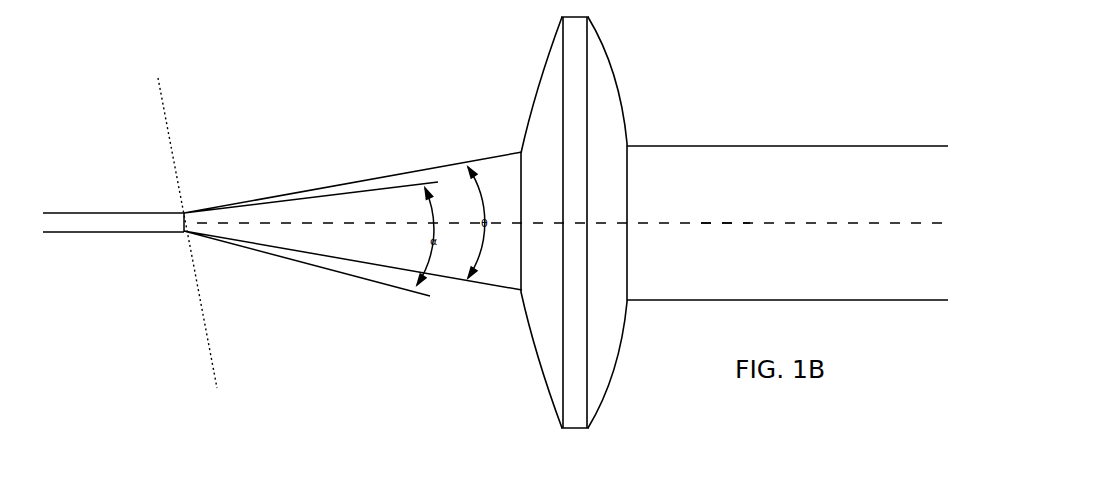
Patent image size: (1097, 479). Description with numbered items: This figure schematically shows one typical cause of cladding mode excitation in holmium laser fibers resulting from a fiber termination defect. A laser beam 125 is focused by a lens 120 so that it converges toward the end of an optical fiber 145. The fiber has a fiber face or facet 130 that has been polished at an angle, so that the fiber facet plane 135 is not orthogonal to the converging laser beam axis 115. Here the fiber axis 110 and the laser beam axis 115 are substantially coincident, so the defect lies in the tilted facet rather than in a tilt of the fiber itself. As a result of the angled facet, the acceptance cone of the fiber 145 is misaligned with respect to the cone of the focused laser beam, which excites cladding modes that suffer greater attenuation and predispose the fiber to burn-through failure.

The fiber axis 110 is at (725, 212).
The laser beam axis 115 is at (725, 212).
The lens 120 is at (593, 35).
The laser beam 125 is at (852, 185).
The fiber face or facet 130 is at (178, 238).
The fiber facet plane 135 is at (180, 219).
The optical fiber 145 is at (78, 230).